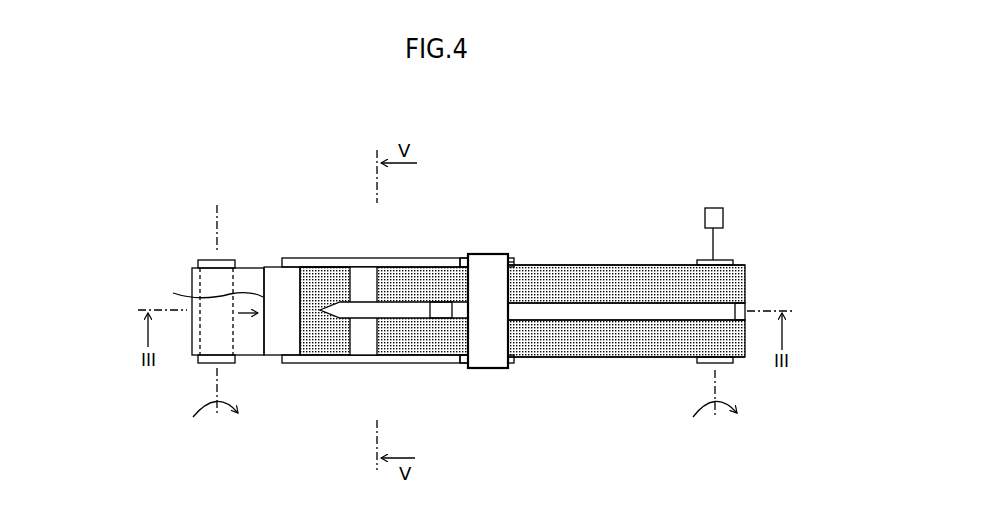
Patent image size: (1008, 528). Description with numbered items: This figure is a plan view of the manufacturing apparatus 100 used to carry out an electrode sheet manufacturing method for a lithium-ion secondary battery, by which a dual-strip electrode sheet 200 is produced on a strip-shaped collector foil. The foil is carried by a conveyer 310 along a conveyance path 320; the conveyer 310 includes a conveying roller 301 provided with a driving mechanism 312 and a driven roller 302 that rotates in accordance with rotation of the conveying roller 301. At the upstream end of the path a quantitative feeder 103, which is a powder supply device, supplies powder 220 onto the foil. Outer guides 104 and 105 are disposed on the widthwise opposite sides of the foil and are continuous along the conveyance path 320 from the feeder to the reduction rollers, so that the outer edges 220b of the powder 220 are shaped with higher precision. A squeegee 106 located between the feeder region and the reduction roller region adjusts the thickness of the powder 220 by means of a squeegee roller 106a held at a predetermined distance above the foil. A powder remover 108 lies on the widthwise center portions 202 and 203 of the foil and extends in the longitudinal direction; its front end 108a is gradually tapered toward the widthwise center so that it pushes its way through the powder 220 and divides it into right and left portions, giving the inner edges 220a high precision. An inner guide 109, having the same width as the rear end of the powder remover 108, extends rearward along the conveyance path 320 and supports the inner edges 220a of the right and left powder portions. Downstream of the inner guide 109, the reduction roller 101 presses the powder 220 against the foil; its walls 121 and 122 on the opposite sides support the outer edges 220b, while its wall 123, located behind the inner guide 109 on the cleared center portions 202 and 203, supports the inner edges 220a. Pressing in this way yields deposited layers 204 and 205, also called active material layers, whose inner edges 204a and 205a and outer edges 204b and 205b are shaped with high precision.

The manufacturing apparatus 100 is at (605, 167).
The reduction roller 101 is at (468, 280).
The quantitative feeder 103 is at (243, 292).
The outer guide 104 is at (375, 365).
The outer guide 105 is at (363, 260).
The squeegee 106 is at (362, 364).
The squeegee roller 106a is at (348, 267).
The powder remover 108 is at (325, 268).
The front end 108a is at (302, 310).
The inner guide 109 is at (393, 364).
The wall 121 is at (517, 263).
The wall 122 is at (525, 365).
The wall 123 is at (448, 304).
The dual-strip electrode sheet 200 is at (200, 293).
The widthwise center portion 202 is at (608, 305).
The widthwise center portion 203 is at (626, 235).
The deposited layer 204 is at (680, 263).
The inner edge 204a is at (647, 303).
The outer edge 204b is at (563, 265).
The deposited layer 205 is at (640, 337).
The inner edge 205a is at (665, 320).
The outer edge 205b is at (547, 357).
The powder 220 is at (390, 267).
The inner edge 220a is at (436, 265).
The outer edge 220b is at (465, 263).
The conveying roller 301 is at (720, 364).
The driven roller 302 is at (225, 364).
The conveyer 310 is at (697, 447).
The driving mechanism 312 is at (708, 208).
The conveyance path 320 is at (600, 380).